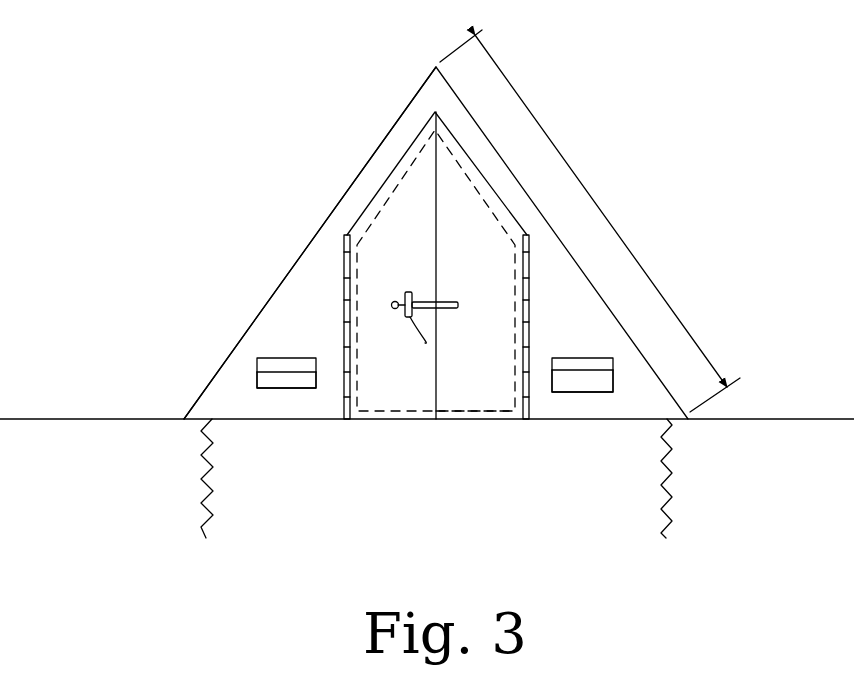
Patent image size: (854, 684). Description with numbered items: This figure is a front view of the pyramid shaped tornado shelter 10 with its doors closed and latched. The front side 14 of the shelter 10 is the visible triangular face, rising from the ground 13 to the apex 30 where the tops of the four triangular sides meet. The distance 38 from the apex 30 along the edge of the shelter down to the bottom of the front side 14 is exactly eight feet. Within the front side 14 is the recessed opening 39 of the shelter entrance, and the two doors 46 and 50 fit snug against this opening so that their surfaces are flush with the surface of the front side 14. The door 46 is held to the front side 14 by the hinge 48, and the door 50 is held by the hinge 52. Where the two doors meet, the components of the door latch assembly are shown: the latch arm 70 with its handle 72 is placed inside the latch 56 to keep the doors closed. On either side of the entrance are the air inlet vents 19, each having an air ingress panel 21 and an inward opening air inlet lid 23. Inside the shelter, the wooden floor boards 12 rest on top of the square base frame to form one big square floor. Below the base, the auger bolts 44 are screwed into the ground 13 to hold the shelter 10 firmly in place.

The shelter 10 is at (406, 220).
The floor boards 12 is at (254, 448).
The ground 13 is at (125, 419).
The front side 14 is at (303, 315).
The air inlet vents 19 is at (275, 355).
The air ingress panels 21 is at (270, 380).
The air inlet lids 23 is at (270, 364).
The apex 30 is at (437, 64).
The distance 38 is at (590, 221).
The recessed opening 39 is at (395, 187).
The auger bolts 44 is at (205, 505).
The door 46 is at (417, 397).
The hinge 48 is at (340, 417).
The door 50 is at (497, 380).
The hinge 52 is at (530, 413).
The latch 56 is at (410, 317).
The latch arm 70 is at (448, 302).
The handle 72 is at (391, 304).